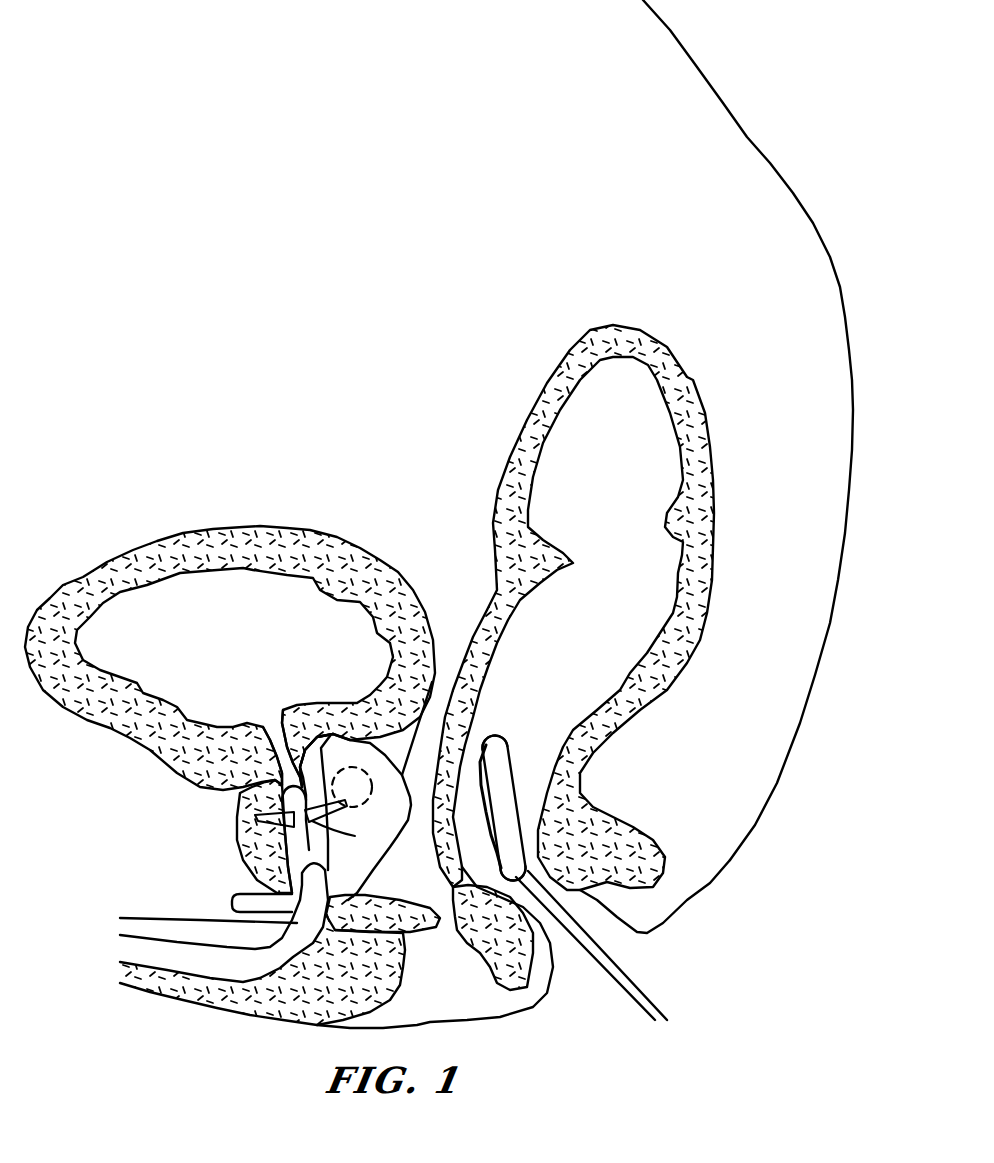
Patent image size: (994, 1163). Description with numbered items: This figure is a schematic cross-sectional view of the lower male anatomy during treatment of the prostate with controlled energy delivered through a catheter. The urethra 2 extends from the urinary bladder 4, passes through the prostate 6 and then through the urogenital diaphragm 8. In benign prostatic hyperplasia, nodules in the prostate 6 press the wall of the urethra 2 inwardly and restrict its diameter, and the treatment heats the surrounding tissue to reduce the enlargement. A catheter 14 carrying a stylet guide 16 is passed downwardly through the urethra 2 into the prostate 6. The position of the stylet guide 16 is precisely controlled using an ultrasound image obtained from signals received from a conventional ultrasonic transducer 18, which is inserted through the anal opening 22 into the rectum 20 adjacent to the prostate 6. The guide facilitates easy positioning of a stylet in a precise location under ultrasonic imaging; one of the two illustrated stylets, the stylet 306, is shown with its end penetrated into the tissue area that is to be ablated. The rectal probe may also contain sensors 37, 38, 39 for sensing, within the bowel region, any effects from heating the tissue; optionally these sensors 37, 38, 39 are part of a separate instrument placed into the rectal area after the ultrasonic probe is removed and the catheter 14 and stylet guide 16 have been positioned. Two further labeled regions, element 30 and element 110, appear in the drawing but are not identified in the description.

The urethra 2 is at (172, 922).
The urinary bladder 4 is at (240, 523).
The prostate 6 is at (255, 816).
The urogenital diaphragm 8 is at (233, 896).
The catheter 14 is at (152, 962).
The stylet guide 16 is at (307, 746).
The ultrasonic transducer 18 is at (507, 767).
The rectum 20 is at (700, 640).
The anal opening 22 is at (620, 950).
The temporal bone portion 30 is at (247, 756).
The sensor 37 is at (498, 877).
The sensor 38 is at (485, 800).
The sensor 39 is at (482, 750).
The inner ear / cochlea bone 110 is at (373, 813).
The stylet 306 is at (340, 834).